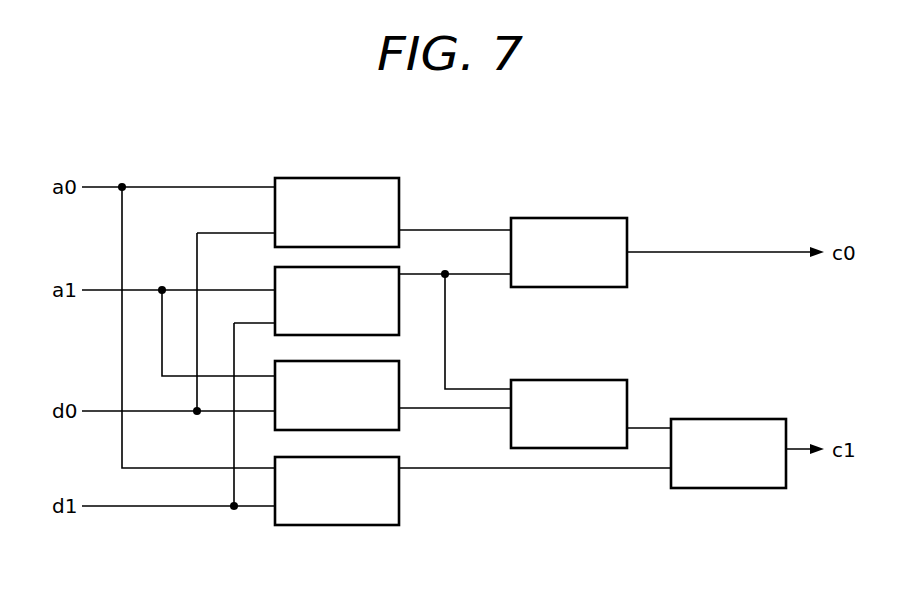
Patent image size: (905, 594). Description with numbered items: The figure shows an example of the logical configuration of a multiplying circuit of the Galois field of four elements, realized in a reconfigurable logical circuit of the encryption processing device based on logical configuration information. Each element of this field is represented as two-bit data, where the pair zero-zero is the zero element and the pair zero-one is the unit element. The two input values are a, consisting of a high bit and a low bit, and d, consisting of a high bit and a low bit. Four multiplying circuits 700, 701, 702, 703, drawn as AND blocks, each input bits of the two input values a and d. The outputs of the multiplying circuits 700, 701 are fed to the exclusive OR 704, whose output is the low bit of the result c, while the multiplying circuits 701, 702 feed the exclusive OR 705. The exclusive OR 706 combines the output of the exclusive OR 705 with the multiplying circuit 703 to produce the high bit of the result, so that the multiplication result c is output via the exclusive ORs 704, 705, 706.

The multiplying circuit 700 is at (362, 178).
The multiplying circuit 701 is at (399, 315).
The multiplying circuit 702 is at (399, 419).
The multiplying circuit 703 is at (357, 525).
The exclusive OR 704 is at (587, 218).
The exclusive OR 705 is at (587, 380).
The exclusive OR 706 is at (745, 419).